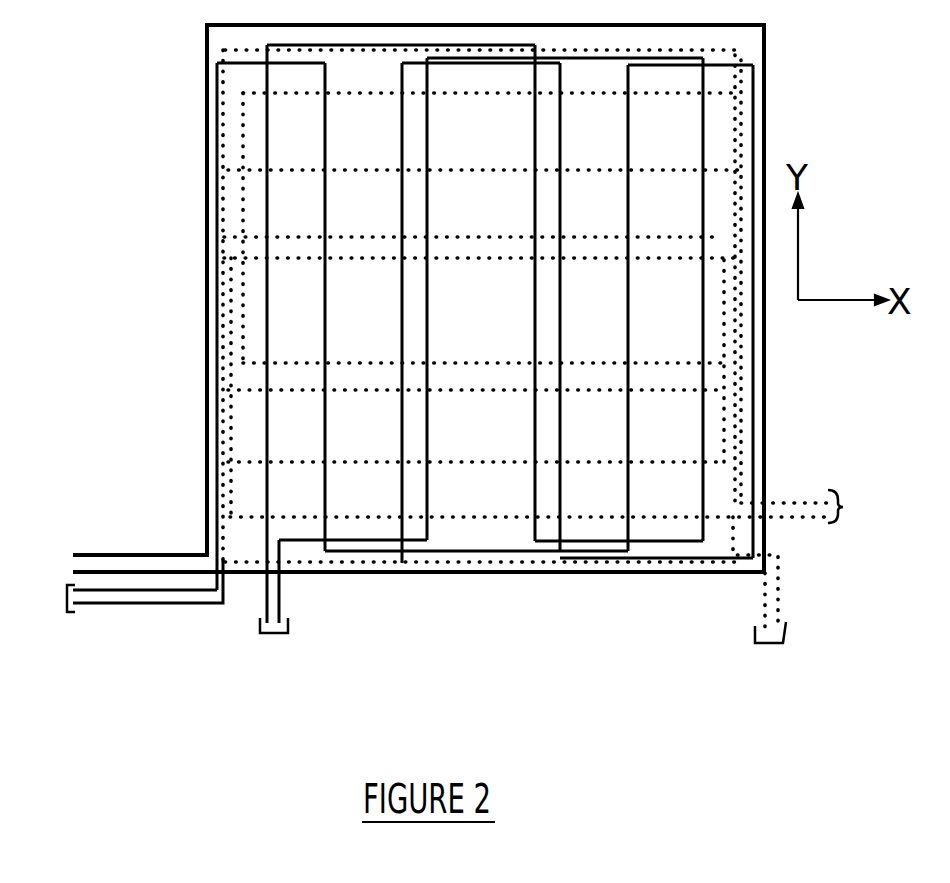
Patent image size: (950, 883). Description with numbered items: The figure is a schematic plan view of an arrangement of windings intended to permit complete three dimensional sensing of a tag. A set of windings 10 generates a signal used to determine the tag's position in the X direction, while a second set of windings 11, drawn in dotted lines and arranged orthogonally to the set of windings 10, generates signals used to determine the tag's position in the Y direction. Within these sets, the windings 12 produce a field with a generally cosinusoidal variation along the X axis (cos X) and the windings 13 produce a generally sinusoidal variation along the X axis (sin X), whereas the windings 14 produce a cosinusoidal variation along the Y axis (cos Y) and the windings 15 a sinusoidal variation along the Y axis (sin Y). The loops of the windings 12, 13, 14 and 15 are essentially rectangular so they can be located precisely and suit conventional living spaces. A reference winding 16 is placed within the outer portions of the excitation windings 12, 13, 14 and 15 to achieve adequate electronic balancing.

The set of windings 10 is at (262, 640).
The set of windings 11 is at (815, 528).
The windings 12 is at (65, 597).
The windings 13 is at (275, 633).
The windings 14 is at (765, 643).
The windings 15 is at (840, 507).
The reference winding 16 is at (203, 455).